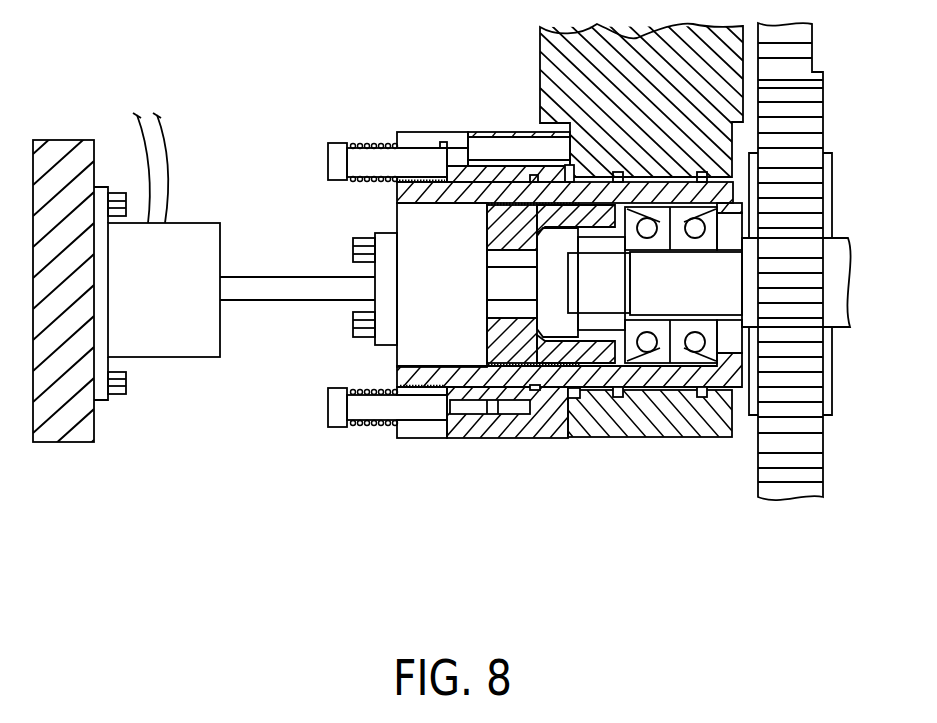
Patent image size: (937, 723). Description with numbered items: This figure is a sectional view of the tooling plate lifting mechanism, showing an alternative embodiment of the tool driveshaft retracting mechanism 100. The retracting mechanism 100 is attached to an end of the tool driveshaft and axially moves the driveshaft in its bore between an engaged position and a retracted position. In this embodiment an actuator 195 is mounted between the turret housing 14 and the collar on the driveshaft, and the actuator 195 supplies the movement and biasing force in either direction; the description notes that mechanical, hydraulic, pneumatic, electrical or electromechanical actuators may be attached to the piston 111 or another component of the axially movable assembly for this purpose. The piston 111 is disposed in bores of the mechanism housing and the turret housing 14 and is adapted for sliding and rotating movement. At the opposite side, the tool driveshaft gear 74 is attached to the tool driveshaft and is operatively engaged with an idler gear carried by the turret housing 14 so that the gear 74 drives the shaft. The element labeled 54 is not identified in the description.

The turret housing 14 is at (65, 158).
The actuator 195 is at (172, 333).
The tool driveshaft retracting mechanism 100 is at (538, 455).
The piston 111 is at (404, 192).
The drive shaft 54 is at (693, 287).
The tool driveshaft gear 74 is at (788, 480).